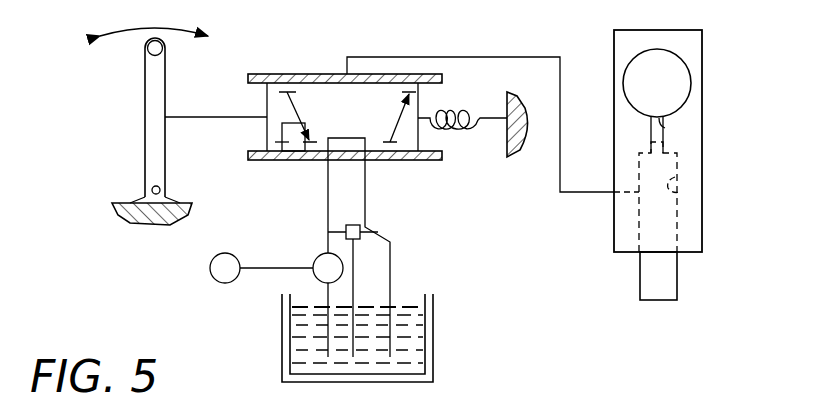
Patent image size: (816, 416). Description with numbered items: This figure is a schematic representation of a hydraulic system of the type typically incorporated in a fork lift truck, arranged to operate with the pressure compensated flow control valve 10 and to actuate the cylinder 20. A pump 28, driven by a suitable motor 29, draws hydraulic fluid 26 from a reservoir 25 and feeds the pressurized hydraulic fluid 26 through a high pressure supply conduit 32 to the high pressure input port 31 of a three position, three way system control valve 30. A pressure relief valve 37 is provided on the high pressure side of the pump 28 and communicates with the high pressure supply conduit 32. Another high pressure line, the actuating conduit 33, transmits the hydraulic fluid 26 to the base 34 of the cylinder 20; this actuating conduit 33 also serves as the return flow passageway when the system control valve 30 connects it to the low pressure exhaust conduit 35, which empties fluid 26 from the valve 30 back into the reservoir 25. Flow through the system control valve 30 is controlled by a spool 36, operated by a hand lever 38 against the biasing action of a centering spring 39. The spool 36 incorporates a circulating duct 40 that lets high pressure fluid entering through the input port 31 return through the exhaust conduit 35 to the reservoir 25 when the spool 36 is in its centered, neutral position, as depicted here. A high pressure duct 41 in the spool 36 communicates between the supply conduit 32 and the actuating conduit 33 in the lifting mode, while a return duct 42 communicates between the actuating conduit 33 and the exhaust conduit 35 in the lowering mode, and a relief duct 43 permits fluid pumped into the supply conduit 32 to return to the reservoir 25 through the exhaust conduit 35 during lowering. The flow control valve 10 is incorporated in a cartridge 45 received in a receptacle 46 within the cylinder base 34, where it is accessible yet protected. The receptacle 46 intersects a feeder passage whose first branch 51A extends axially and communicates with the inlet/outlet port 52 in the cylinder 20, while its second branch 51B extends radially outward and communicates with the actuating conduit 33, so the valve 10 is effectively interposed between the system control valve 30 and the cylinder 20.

The pressure compensated flow control valve 10 is at (687, 281).
The cylinder 20 is at (690, 73).
The reservoir 25 is at (283, 333).
The hydraulic fluid 26 is at (418, 344).
The pump 28 is at (322, 253).
The motor 29 is at (210, 268).
The system control valve 30 is at (288, 63).
The high pressure input port 31 is at (342, 155).
The high pressure supply conduit 32 is at (328, 178).
The actuating conduit 33 is at (480, 56).
The cylinder base 34 is at (628, 231).
The low pressure exhaust conduit 35 is at (367, 180).
The spool 36 is at (340, 103).
The pressure relief valve 37 is at (363, 232).
The hand lever 38 is at (152, 105).
The centering spring 39 is at (460, 116).
The circulating duct 40 is at (340, 160).
The high pressure duct 41 is at (390, 108).
The return duct 42 is at (300, 112).
The relief duct 43 is at (282, 130).
The cartridge 45 is at (633, 268).
The receptacle 46 is at (683, 192).
The first branch of feeder passage 51A is at (651, 142).
The second branch of feeder passage 51B is at (637, 192).
The inlet/outlet port 52 is at (663, 128).